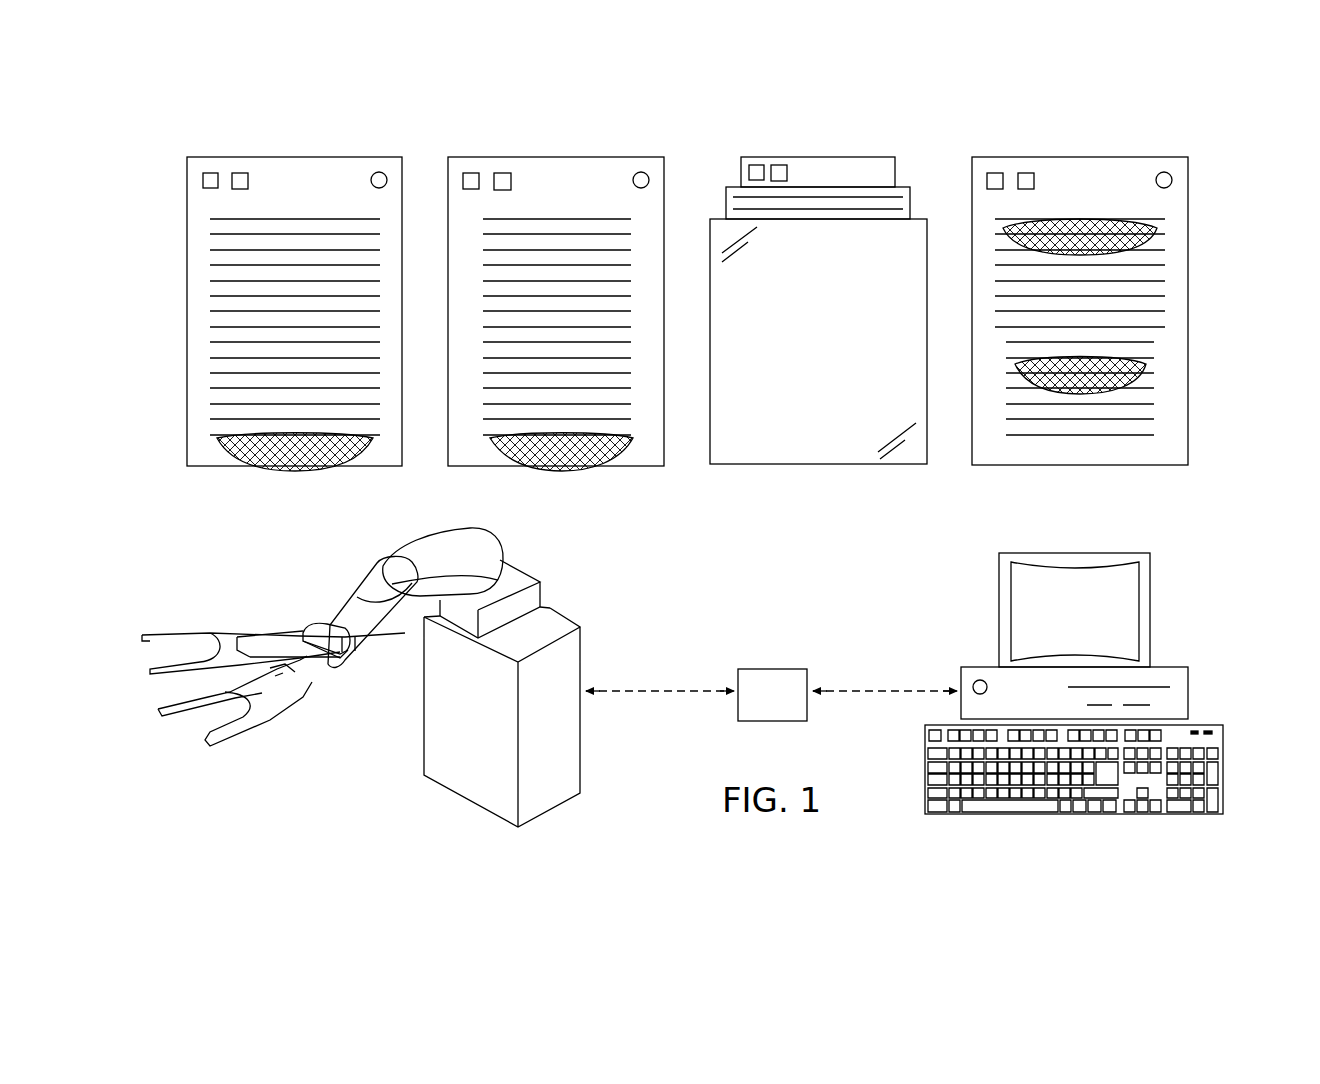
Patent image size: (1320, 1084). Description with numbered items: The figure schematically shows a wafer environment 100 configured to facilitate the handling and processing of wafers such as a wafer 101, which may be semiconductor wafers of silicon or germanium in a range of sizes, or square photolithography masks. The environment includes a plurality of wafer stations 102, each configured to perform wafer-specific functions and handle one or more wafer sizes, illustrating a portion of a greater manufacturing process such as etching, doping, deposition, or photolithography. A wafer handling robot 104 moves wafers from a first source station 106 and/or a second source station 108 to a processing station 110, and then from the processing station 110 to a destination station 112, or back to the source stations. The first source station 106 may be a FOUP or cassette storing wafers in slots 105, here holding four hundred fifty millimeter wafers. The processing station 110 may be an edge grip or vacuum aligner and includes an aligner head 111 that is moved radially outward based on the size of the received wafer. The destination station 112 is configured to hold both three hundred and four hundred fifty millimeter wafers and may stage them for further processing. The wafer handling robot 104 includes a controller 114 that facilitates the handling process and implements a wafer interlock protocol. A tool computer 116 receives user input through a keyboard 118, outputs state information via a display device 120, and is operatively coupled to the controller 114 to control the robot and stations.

The wafer environment 100 is at (736, 52).
The wafer 101 is at (290, 470).
The plurality of wafer stations 102 is at (632, 92).
The wafer handling robot 104 is at (520, 570).
The slots 105 is at (174, 283).
The first source station 106 is at (327, 315).
The second source station 108 is at (664, 157).
The processing station 110 is at (895, 157).
The aligner head 111 is at (910, 188).
The destination station 112 is at (1188, 157).
The controller 114 is at (771, 695).
The tool computer 116 is at (1105, 655).
The keyboard 118 is at (1223, 725).
The display device 120 is at (1150, 553).